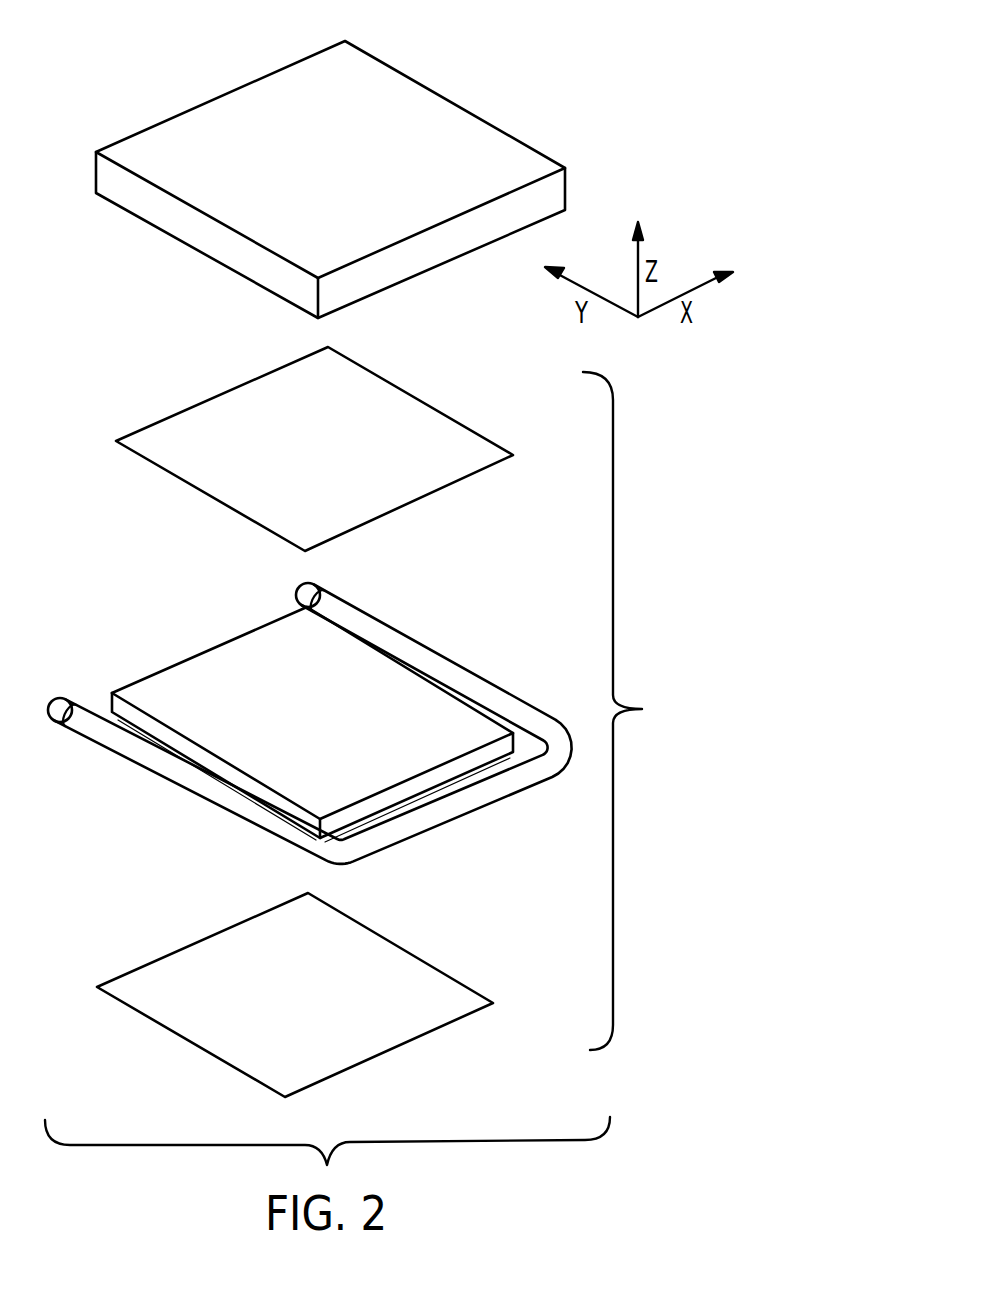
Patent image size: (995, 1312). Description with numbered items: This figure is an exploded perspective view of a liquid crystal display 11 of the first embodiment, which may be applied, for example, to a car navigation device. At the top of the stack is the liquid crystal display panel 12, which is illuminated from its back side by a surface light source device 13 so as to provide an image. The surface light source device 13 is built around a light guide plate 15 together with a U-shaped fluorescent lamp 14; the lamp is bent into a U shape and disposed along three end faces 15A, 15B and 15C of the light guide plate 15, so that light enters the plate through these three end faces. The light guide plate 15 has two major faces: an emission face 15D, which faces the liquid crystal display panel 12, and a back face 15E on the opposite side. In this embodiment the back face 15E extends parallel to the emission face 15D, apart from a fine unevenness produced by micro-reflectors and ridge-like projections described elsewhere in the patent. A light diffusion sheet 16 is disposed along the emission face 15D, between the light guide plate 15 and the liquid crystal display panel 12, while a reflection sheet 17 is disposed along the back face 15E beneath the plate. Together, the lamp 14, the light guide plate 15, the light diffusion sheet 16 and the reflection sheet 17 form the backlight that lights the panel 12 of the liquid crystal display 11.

The liquid crystal display 11 is at (150, 1030).
The liquid crystal display panel 12 is at (210, 127).
The surface light source device 13 is at (720, 711).
The U-shaped fluorescent lamp 14 is at (475, 685).
The light guide plate 15 is at (306, 709).
The end face 15A is at (417, 668).
The end face 15B is at (152, 728).
The end face 15C is at (423, 788).
The emission face 15D is at (175, 675).
The back face 15E is at (200, 833).
The light diffusion sheet 16 is at (418, 412).
The reflection sheet 17 is at (415, 987).